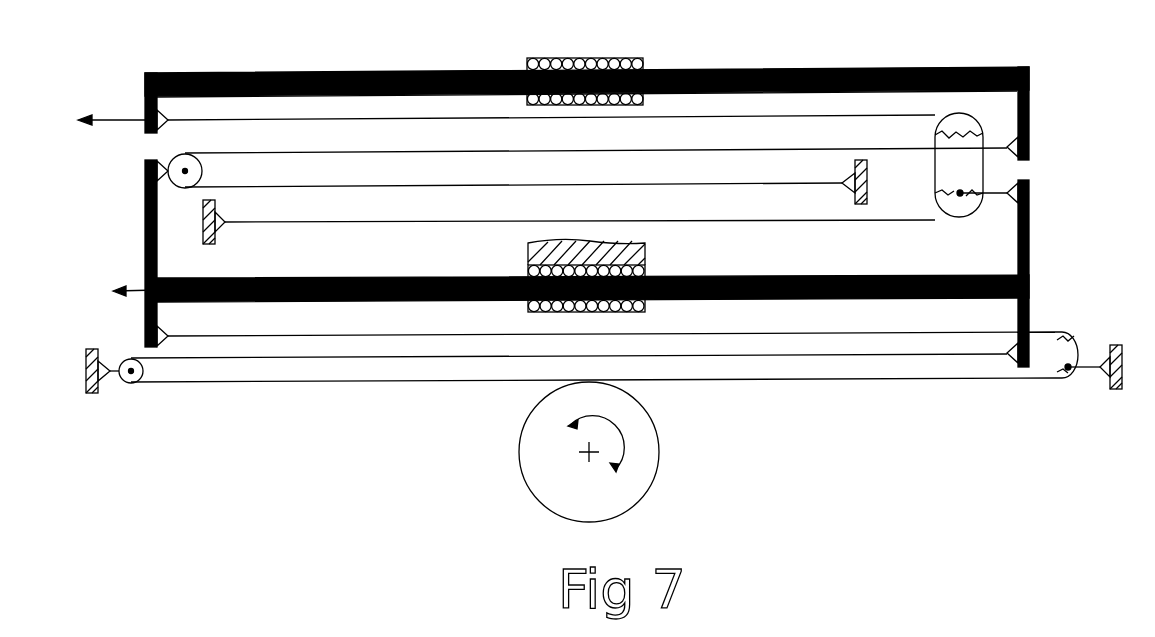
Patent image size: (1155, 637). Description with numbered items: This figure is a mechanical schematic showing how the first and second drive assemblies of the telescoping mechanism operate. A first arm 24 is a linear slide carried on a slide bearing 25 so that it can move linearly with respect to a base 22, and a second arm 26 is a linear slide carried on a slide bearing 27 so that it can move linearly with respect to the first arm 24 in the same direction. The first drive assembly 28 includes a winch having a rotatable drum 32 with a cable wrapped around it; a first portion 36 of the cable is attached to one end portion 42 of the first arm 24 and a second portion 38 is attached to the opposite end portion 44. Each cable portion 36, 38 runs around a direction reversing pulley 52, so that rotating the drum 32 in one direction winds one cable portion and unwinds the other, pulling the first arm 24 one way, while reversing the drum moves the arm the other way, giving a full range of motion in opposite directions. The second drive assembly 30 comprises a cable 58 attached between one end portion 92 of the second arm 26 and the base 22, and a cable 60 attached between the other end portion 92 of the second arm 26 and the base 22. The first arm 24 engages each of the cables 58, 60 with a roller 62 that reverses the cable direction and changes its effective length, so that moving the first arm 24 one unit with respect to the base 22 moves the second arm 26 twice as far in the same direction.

The base 22 is at (208, 244).
The first arm 24 is at (785, 275).
The slide bearing 25 is at (647, 258).
The second arm 26 is at (806, 66).
The slide bearing 27 is at (607, 58).
The first drive assembly 28 is at (757, 327).
The second drive assembly 30 is at (500, 142).
The rotatable drum 32 is at (652, 477).
The first portion of cable 36 is at (812, 379).
The second portion of cable 38 is at (347, 382).
The end portion of first arm 42 is at (157, 321).
The end portion of first arm 44 is at (1006, 350).
The direction reversing pulley 52 is at (132, 383).
The cable 58 is at (568, 152).
The cable 60 is at (707, 117).
The roller 62 is at (202, 171).
The end portion of second arm 92 is at (145, 108).